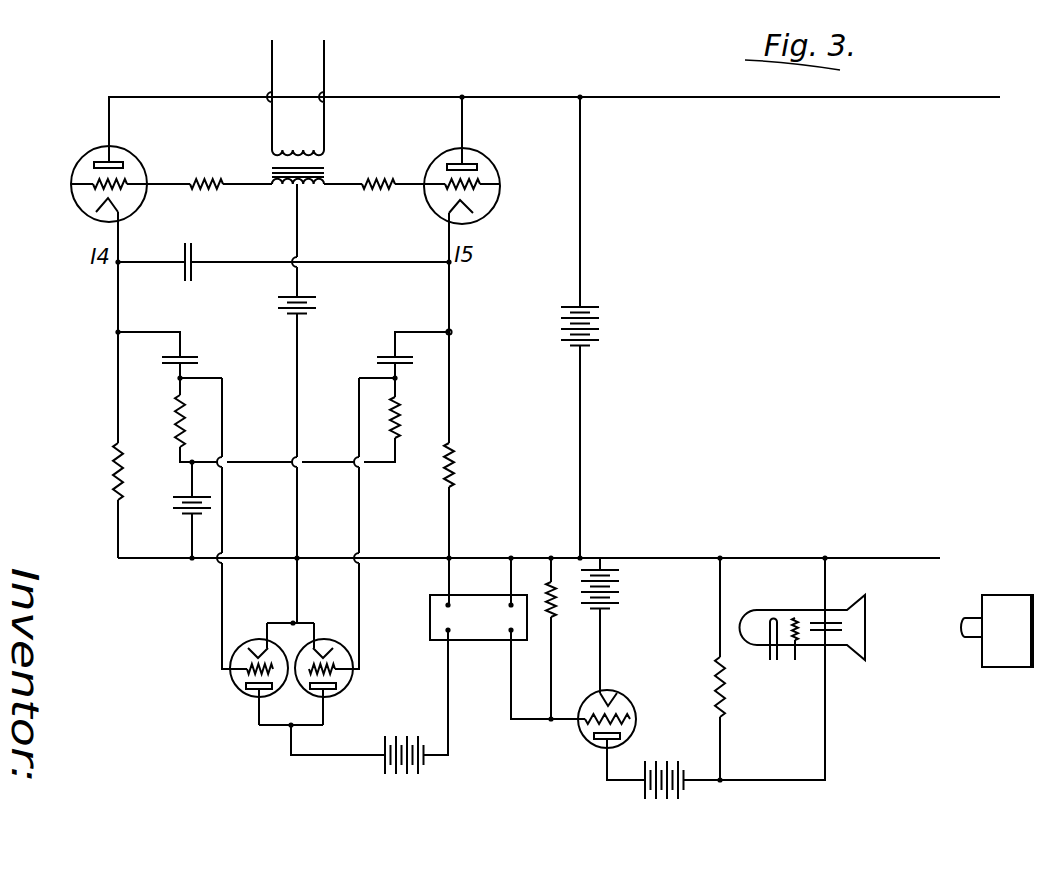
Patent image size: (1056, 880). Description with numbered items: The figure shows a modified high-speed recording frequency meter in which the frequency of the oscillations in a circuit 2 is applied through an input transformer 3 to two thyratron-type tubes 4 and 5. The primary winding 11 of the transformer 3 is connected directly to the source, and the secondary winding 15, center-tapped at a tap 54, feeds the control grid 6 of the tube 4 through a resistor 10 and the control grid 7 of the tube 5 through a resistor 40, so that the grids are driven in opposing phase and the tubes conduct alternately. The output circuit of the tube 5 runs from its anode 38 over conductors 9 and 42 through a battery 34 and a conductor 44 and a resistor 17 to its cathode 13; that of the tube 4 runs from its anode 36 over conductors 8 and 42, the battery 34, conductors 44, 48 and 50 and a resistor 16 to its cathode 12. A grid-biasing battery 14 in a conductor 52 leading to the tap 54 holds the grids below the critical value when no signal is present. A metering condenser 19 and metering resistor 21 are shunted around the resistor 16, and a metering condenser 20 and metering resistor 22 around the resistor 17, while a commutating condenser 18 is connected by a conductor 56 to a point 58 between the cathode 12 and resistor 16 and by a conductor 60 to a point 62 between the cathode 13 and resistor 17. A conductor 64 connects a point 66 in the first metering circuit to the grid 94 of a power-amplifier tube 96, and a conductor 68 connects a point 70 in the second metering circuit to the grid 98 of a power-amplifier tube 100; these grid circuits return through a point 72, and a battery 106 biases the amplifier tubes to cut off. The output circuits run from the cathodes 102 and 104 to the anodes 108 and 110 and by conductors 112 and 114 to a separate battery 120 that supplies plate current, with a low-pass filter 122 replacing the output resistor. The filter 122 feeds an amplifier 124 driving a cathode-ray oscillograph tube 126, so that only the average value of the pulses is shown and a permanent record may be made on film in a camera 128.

The circuit 2 is at (322, 70).
The input transformer 3 is at (322, 170).
The tube 4 is at (71, 176).
The tube 5 is at (501, 176).
The control grid 6 is at (95, 186).
The control grid 7 is at (500, 188).
The conductor 8 is at (107, 113).
The conductor 9 is at (465, 127).
The resistor 10 is at (193, 182).
The primary winding 11 is at (296, 160).
The cathode or filament 12 is at (100, 212).
The cathode or filament 13 is at (481, 209).
The grid-biasing battery 14 is at (302, 303).
The secondary winding 15 is at (278, 187).
The resistor 16 is at (112, 467).
The resistor 17 is at (455, 472).
The commutating condenser 18 is at (194, 258).
The metering condenser 19 is at (192, 360).
The metering condenser 20 is at (390, 356).
The metering resistor 21 is at (176, 428).
The metering resistor 22 is at (398, 420).
The battery 34 is at (595, 322).
The anode or plate 36 is at (97, 162).
The anode or plate 38 is at (477, 166).
The resistor 40 is at (398, 181).
The conductor 42 is at (497, 97).
The conductor 44 is at (567, 557).
The conductor 48 is at (318, 561).
The conductor 50 is at (247, 557).
The conductor 52 is at (300, 393).
The tap 54 is at (300, 188).
The conductor 56 is at (147, 261).
The point 58 is at (116, 264).
The conductor 60 is at (246, 265).
The point 62 is at (453, 266).
The conductor 64 is at (220, 590).
The point 66 is at (178, 380).
The conductor 68 is at (362, 598).
The point 70 is at (398, 378).
The point 72 is at (300, 547).
The grid 94 is at (250, 672).
The power-amplifier tube 96 is at (231, 658).
The grid 98 is at (337, 674).
The power-amplifier tube 100 is at (353, 661).
The cathode 102 is at (242, 657).
The cathode 104 is at (333, 657).
The battery 106 is at (186, 514).
The anode 108 is at (245, 694).
The anode 110 is at (340, 692).
The conductor 112 is at (272, 738).
The conductor 114 is at (308, 728).
The battery 120 is at (385, 765).
The low-pass filter 122 is at (482, 642).
The amplifier 124 is at (583, 740).
The cathode-ray oscillograph tube 126 is at (758, 607).
The camera 128 is at (1015, 650).